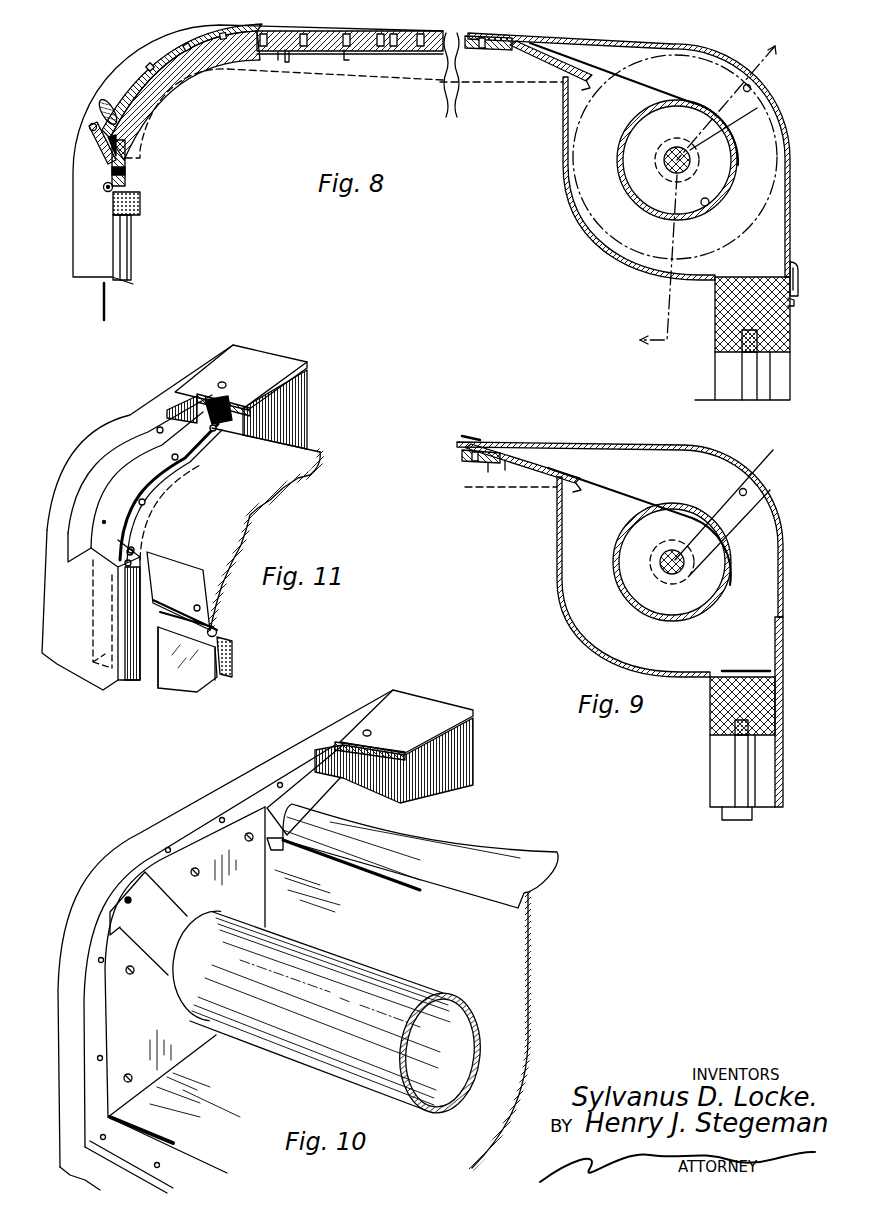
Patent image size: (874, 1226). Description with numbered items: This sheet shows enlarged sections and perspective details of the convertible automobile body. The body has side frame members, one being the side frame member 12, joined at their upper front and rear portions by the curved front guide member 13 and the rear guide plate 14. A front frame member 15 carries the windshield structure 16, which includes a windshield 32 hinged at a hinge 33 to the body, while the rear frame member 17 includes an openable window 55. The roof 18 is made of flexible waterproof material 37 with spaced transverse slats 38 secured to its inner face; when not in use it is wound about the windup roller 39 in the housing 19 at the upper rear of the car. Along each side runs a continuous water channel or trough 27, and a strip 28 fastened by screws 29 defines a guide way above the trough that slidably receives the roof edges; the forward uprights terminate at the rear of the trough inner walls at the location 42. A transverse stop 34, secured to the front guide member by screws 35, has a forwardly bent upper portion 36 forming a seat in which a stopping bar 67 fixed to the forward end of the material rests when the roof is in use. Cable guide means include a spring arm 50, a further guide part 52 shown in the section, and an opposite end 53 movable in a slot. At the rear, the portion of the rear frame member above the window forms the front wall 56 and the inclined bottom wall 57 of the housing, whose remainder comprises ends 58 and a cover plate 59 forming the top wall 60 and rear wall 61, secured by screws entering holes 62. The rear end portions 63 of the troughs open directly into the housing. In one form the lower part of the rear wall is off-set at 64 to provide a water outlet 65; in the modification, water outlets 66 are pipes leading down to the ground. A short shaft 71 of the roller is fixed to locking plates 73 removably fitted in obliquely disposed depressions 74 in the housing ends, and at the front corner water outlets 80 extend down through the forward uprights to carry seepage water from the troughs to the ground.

In FIG. 8, the side frame member 12 is at (721, 195).
In FIG. 8, the front guide member 13 is at (170, 80).
In FIG. 11, the front guide member 13 is at (268, 472).
In FIG. 8, the rear guide plate 14 is at (545, 68).
In FIG. 9, the rear guide plate 14 is at (530, 480).
In FIG. 10, the rear guide plate 14 is at (506, 851).
In FIG. 8, the front frame member 15 is at (85, 256).
In FIG. 8, the windshield structure 16 is at (133, 210).
In FIG. 8, the rear frame member 17 is at (790, 333).
In FIG. 9, the rear frame member 17 is at (776, 722).
In FIG. 8, the roof 18 is at (393, 52).
In FIG. 8, the housing 19 is at (762, 229).
In FIG. 10, the housing 19 is at (309, 1010).
In FIG. 8, the water channel or trough 27 is at (492, 70).
In FIG. 9, the water channel or trough 27 is at (480, 475).
In FIG. 11, the water channel or trough 27 is at (140, 470).
In FIG. 10, the water channel or trough 27 is at (400, 781).
In FIG. 8, the strip 28 is at (350, 52).
In FIG. 11, the strip 28 is at (270, 366).
In FIG. 10, the strip 28 is at (440, 708).
In FIG. 11, the screws 29 is at (221, 381).
In FIG. 10, the screws 29 is at (366, 729).
In FIG. 8, the windshield 32 is at (128, 263).
In FIG. 11, the windshield 32 is at (207, 675).
In FIG. 8, the hinge 33 is at (105, 188).
In FIG. 11, the hinge 33 is at (220, 631).
In FIG. 8, the transverse stop 34 is at (100, 147).
In FIG. 11, the transverse stop 34 is at (187, 573).
In FIG. 8, the screws 35 is at (110, 170).
In FIG. 8, the forwardly bent upper portion 36 is at (91, 125).
In FIG. 11, the forwardly bent upper portion 36 is at (133, 558).
In FIG. 8, the flexible waterproof material 37 is at (195, 44).
In FIG. 9, the flexible waterproof material 37 is at (465, 438).
In FIG. 8, the slats 38 is at (430, 52).
In FIG. 9, the slats 38 is at (468, 463).
In FIG. 8, the windup roller 39 is at (712, 206).
In FIG. 9, the windup roller 39 is at (652, 616).
In FIG. 10, the windup roller 39 is at (440, 1053).
In FIG. 8, the termination of forward uprights 42 is at (148, 140).
In FIG. 11, the termination of forward uprights 42 is at (165, 474).
In FIG. 8, the spring arm 50 is at (292, 64).
In FIG. 8, the slot 52 is at (344, 50).
In FIG. 8, the opposite end of guide means 53 is at (285, 62).
In FIG. 8, the window 55 is at (755, 391).
In FIG. 9, the window 55 is at (750, 779).
In FIG. 8, the front wall 56 is at (563, 176).
In FIG. 9, the front wall 56 is at (557, 562).
In FIG. 10, the front wall 56 is at (531, 1002).
In FIG. 8, the bottom wall 57 is at (705, 281).
In FIG. 9, the bottom wall 57 is at (702, 677).
In FIG. 10, the bottom wall 57 is at (178, 1110).
In FIG. 8, the ends 58 is at (700, 72).
In FIG. 9, the ends 58 is at (700, 466).
In FIG. 10, the ends 58 is at (133, 993).
In FIG. 8, the cover plate 59 is at (750, 88).
In FIG. 9, the cover plate 59 is at (748, 491).
In FIG. 8, the top wall 60 is at (648, 44).
In FIG. 9, the top wall 60 is at (646, 446).
In FIG. 8, the rear wall 61 is at (792, 162).
In FIG. 9, the rear wall 61 is at (785, 586).
In FIG. 10, the holes 62 is at (168, 846).
In FIG. 10, the rear end portions of troughs 63 is at (278, 852).
In FIG. 8, the off-set 64 is at (798, 278).
In FIG. 8, the water outlet 65 is at (794, 303).
In FIG. 9, the water outlets 66 is at (738, 672).
In FIG. 8, the stopping bar 67 is at (106, 100).
In FIG. 8, the short shaft 71 is at (671, 170).
In FIG. 9, the short shaft 71 is at (664, 567).
In FIG. 8, the locking plates 73 is at (757, 108).
In FIG. 9, the locking plates 73 is at (724, 500).
In FIG. 10, the locking plates 73 is at (145, 921).
In FIG. 10, the obliquely disposed depressions 74 is at (124, 898).
In FIG. 11, the water outlets 80 is at (100, 606).